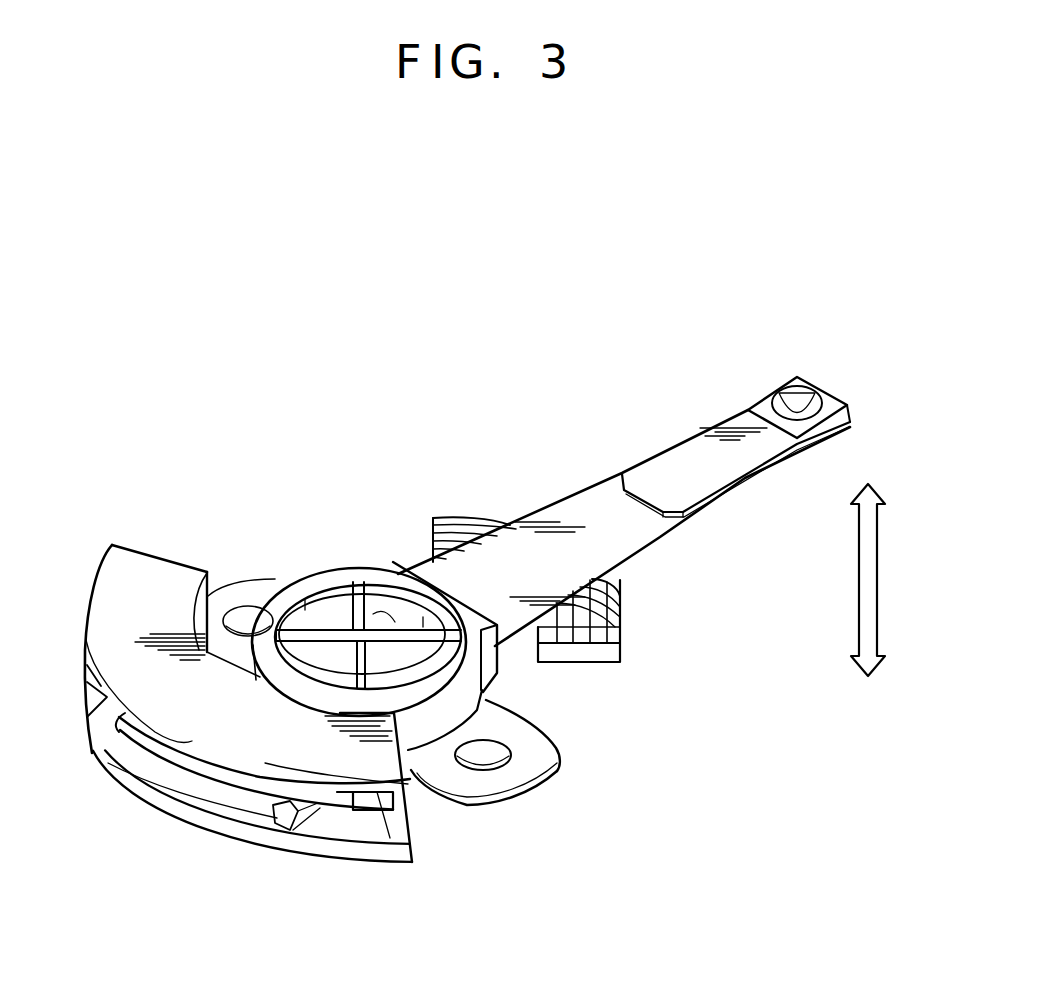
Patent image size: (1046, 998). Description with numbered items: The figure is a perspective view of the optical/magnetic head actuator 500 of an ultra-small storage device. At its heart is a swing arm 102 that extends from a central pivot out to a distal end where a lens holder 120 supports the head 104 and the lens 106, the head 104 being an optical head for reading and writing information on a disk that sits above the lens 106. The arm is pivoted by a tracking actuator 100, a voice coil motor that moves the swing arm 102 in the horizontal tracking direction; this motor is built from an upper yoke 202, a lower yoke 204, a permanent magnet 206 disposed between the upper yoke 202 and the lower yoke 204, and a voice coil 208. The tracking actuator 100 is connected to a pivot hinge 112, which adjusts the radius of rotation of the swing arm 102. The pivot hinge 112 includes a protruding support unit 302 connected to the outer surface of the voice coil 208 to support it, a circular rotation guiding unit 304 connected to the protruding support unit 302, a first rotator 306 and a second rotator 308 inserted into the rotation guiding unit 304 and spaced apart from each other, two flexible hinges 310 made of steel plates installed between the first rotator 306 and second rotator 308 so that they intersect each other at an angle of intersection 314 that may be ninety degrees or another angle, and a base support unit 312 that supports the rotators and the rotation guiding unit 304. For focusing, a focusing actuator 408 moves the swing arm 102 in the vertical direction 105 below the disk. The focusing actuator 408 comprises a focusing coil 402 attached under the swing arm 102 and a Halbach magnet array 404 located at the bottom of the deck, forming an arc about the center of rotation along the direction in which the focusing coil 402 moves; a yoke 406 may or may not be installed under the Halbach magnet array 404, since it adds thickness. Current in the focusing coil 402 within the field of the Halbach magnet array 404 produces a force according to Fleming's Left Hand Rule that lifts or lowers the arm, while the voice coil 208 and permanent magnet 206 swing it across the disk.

The optical/magnetic head actuator 500 is at (203, 318).
The tracking actuator 100 is at (152, 527).
The swing arm 102 is at (578, 512).
The head 104 is at (828, 412).
The vertical direction 105 is at (878, 581).
The lens 106 is at (793, 400).
The pivot hinge 112 is at (312, 476).
The lens holder 120 is at (669, 462).
The upper yoke 202 is at (157, 694).
The lower yoke 204 is at (382, 850).
The permanent magnet 206 is at (340, 797).
The voice coil 208 is at (163, 777).
The protruding support unit 302 is at (283, 820).
The rotation guiding unit 304 is at (437, 724).
The first rotator 306 is at (286, 636).
The second rotator 308 is at (390, 604).
The flexible hinges 310 is at (338, 640).
The base support unit 312 is at (523, 768).
The angle of intersection 314 is at (404, 557).
The focusing coil 402 is at (583, 600).
The Halbach magnet array 404 is at (615, 635).
The yoke 406 is at (610, 652).
The focusing actuator 408 is at (696, 593).